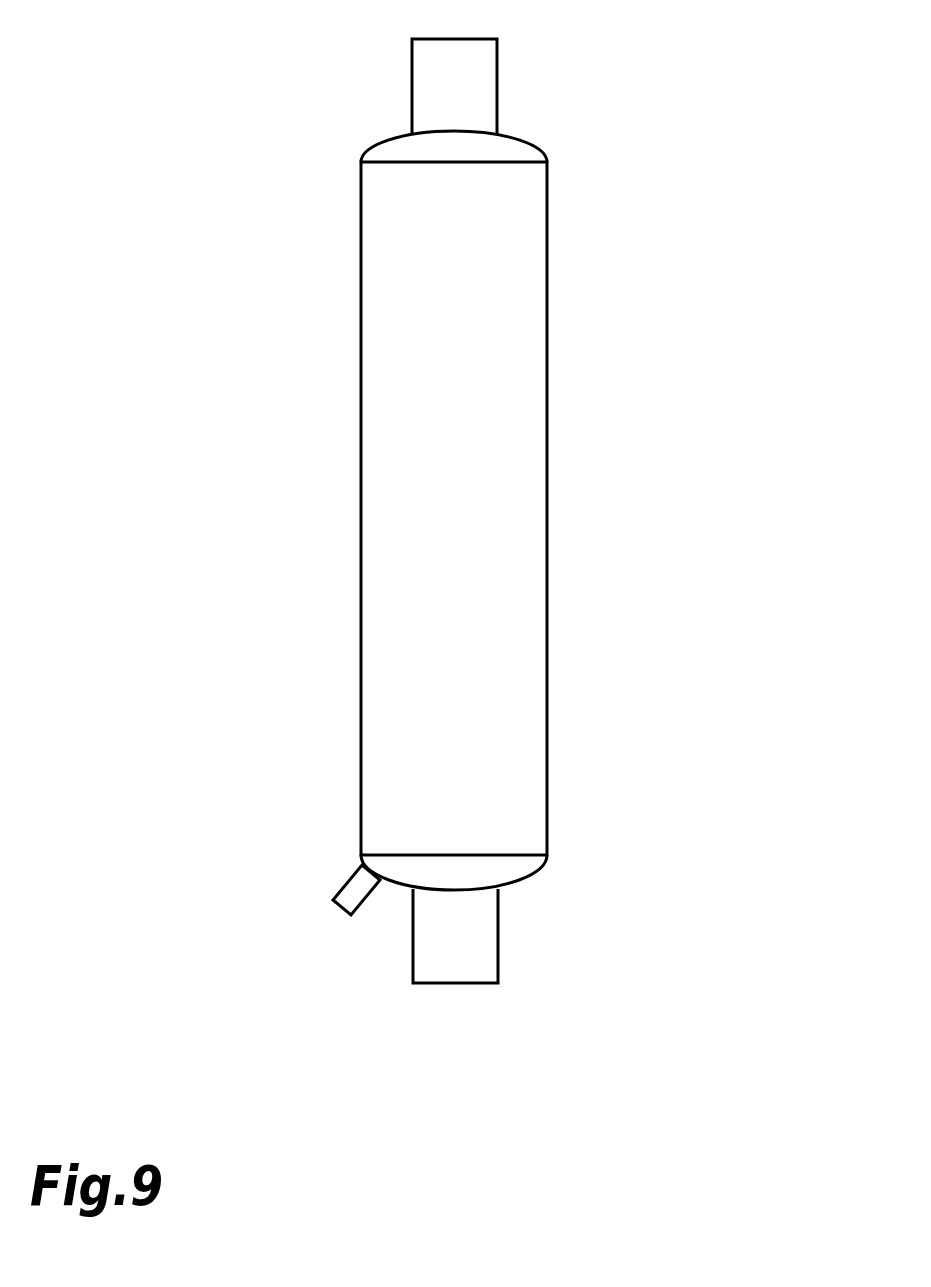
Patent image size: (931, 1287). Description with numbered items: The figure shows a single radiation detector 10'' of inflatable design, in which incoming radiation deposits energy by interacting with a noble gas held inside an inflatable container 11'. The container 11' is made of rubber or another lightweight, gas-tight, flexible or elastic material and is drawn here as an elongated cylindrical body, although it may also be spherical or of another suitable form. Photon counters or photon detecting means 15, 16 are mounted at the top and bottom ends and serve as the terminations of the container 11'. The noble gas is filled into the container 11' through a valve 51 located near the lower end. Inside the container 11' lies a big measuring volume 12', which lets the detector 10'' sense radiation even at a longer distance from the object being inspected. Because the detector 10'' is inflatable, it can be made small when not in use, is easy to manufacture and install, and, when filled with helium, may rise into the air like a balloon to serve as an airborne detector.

The radiation detector 10'' is at (169, 261).
The container 11' is at (562, 510).
The measuring volume 12' is at (313, 589).
The photon counter 15 is at (472, 98).
The photon counter 16 is at (485, 927).
The valve 51 is at (333, 902).